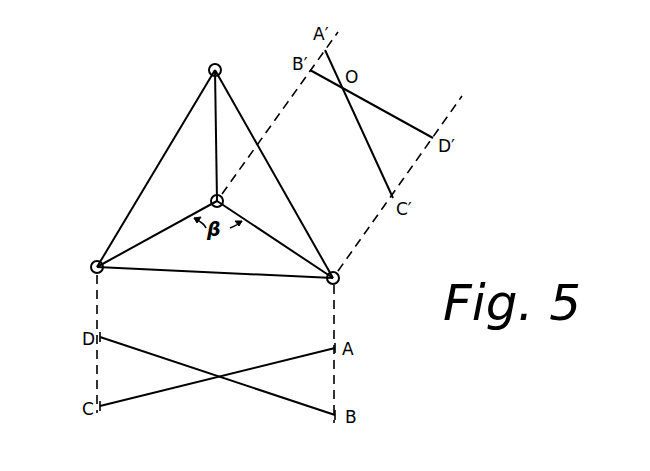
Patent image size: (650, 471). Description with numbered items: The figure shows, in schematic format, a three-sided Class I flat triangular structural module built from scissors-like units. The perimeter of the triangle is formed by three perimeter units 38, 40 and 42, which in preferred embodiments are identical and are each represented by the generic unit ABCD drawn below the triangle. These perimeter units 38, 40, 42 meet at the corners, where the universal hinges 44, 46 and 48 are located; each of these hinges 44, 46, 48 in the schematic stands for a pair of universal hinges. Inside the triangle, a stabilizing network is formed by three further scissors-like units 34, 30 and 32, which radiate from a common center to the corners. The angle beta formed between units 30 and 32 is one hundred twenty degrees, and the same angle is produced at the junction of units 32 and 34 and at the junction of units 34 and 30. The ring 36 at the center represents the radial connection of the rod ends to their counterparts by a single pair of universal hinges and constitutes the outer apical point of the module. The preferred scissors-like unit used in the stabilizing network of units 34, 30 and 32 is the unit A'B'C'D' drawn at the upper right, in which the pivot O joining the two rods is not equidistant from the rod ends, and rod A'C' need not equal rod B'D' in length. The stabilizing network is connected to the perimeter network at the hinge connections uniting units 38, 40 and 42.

The scissors-like unit 30 is at (155, 236).
The scissors-like unit 32 is at (277, 243).
The scissors-like unit 34 is at (214, 135).
The ring 36 is at (211, 198).
The perimeter unit 38 is at (170, 147).
The perimeter unit 40 is at (295, 212).
The perimeter unit 42 is at (223, 277).
The universal hinge 44 is at (92, 262).
The universal hinge 46 is at (221, 64).
The universal hinge 48 is at (340, 281).